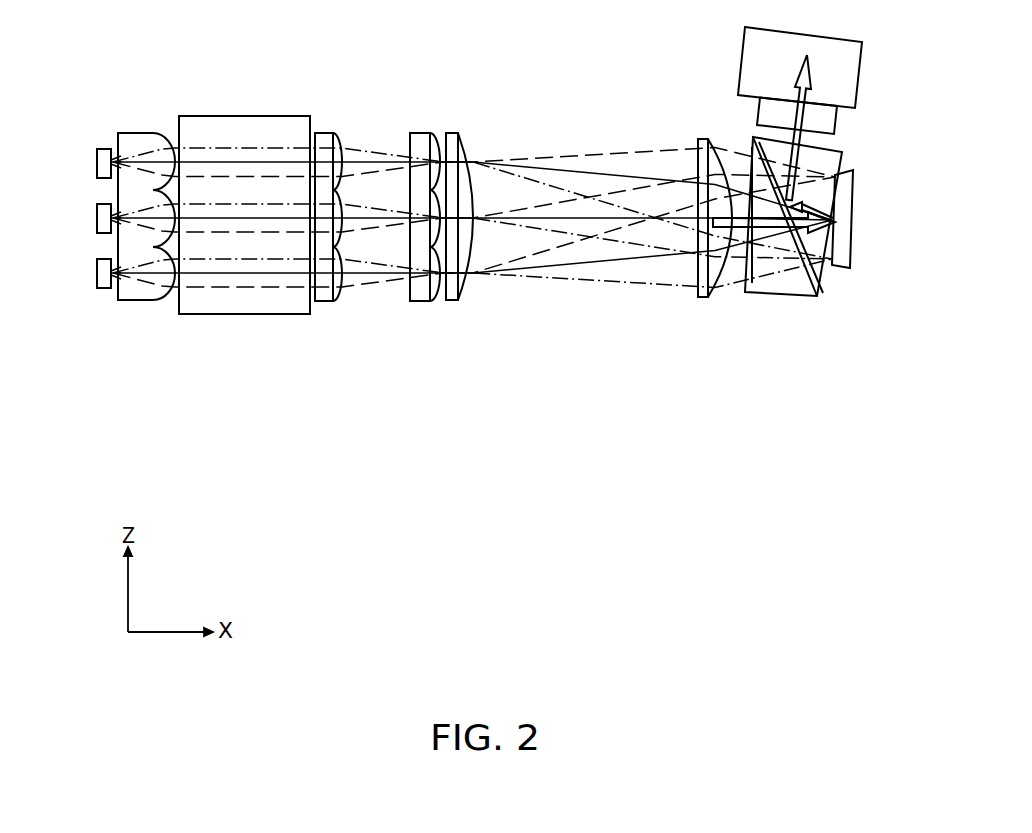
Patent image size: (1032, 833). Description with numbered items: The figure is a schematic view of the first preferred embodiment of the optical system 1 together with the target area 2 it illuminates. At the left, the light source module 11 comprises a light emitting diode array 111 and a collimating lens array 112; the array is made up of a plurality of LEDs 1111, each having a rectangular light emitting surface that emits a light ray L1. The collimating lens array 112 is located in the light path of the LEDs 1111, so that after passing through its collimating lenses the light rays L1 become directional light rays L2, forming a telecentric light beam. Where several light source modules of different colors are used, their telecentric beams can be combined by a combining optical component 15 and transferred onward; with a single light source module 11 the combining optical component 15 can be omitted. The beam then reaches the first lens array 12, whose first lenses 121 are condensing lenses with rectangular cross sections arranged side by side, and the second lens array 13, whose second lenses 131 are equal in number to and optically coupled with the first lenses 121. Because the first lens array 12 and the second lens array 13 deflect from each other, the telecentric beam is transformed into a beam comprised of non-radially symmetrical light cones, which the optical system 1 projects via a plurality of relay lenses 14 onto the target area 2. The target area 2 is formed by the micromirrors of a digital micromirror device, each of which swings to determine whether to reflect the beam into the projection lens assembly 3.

The optical system 1 is at (212, 63).
The light source module 11 is at (202, 373).
The light emitting diode array 111 is at (102, 290).
The light emitting diode 1111 is at (106, 276).
The collimating lens array 112 is at (152, 293).
The light ray L1 is at (135, 152).
The directional light ray L2 is at (258, 148).
The combining optical component 15 is at (277, 303).
The first lens array 12 is at (323, 303).
The first lens 121 is at (338, 143).
The second lens array 13 is at (423, 298).
The second lens 131 is at (433, 140).
The relay lens 14 is at (453, 303).
The target area 2 is at (862, 235).
The projection lens assembly 3 is at (872, 80).